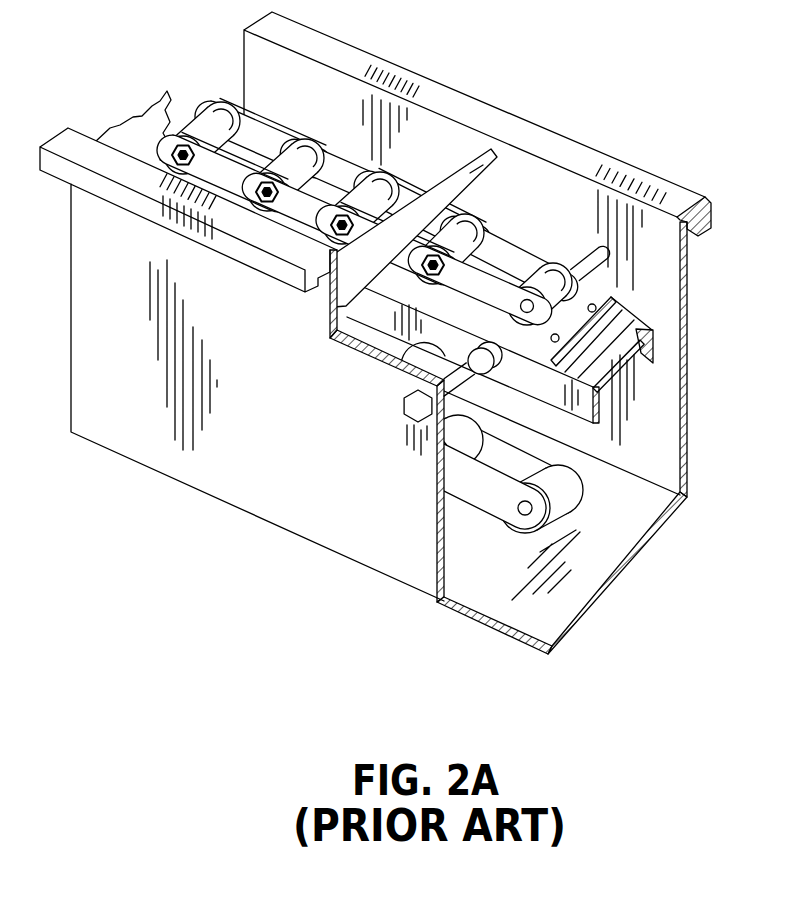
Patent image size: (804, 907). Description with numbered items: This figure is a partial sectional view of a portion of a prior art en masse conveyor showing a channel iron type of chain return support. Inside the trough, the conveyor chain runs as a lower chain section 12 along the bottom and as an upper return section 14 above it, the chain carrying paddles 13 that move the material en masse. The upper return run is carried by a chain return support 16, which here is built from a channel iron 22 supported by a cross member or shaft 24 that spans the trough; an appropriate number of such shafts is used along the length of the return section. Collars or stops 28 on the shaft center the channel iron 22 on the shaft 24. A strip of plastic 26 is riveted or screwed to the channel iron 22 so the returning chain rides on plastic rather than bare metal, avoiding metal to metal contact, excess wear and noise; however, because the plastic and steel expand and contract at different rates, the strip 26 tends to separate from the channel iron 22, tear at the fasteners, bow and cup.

The lower chain section 12 is at (488, 497).
The paddles 13 is at (491, 170).
The upper return section 14 is at (222, 117).
The chain return support 16 is at (604, 300).
The channel iron 22 is at (623, 347).
The cross member or shaft 24 is at (592, 247).
The plastic strip 26 is at (623, 317).
The collars or stops 28 is at (403, 360).